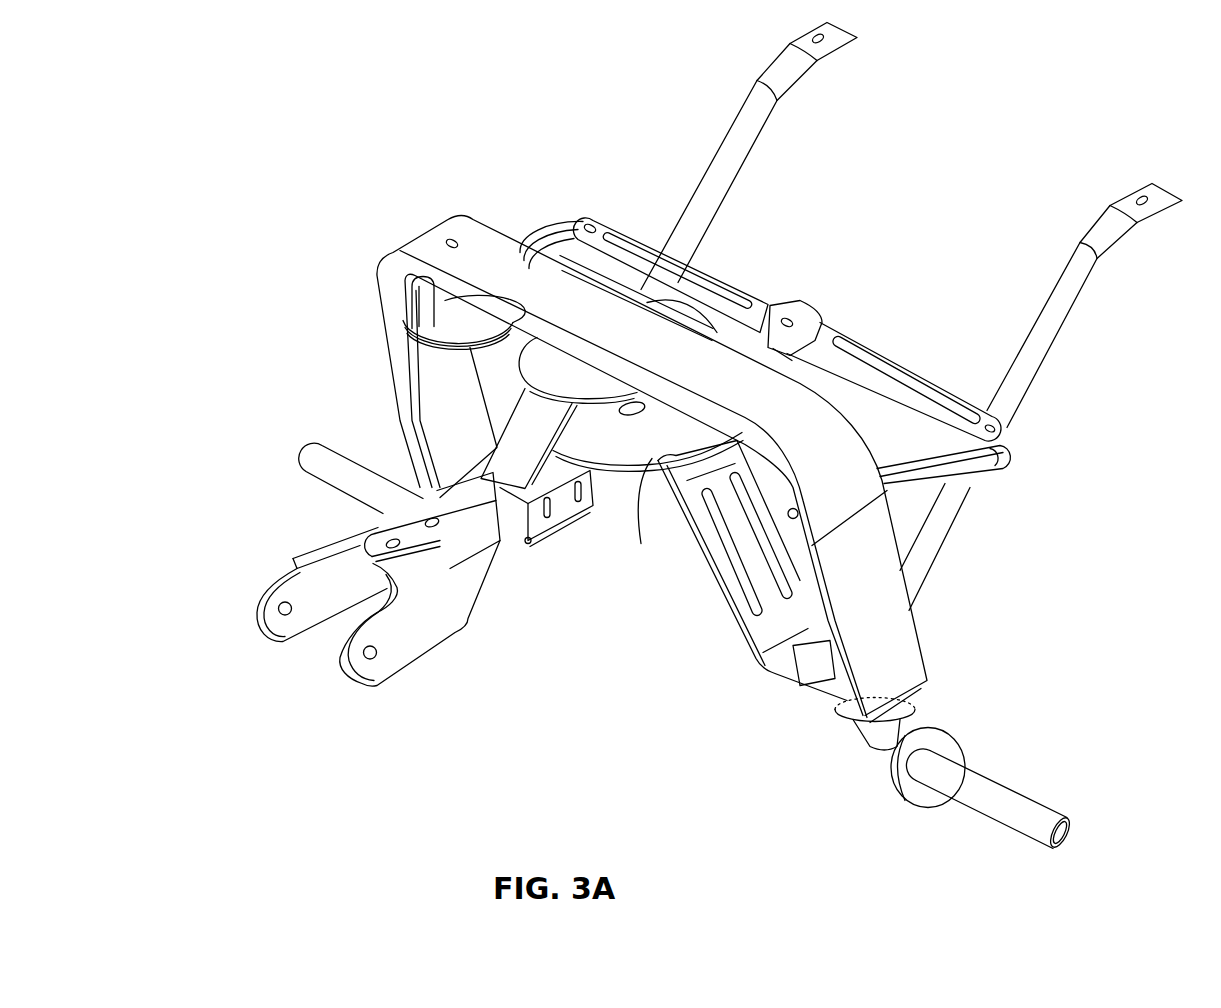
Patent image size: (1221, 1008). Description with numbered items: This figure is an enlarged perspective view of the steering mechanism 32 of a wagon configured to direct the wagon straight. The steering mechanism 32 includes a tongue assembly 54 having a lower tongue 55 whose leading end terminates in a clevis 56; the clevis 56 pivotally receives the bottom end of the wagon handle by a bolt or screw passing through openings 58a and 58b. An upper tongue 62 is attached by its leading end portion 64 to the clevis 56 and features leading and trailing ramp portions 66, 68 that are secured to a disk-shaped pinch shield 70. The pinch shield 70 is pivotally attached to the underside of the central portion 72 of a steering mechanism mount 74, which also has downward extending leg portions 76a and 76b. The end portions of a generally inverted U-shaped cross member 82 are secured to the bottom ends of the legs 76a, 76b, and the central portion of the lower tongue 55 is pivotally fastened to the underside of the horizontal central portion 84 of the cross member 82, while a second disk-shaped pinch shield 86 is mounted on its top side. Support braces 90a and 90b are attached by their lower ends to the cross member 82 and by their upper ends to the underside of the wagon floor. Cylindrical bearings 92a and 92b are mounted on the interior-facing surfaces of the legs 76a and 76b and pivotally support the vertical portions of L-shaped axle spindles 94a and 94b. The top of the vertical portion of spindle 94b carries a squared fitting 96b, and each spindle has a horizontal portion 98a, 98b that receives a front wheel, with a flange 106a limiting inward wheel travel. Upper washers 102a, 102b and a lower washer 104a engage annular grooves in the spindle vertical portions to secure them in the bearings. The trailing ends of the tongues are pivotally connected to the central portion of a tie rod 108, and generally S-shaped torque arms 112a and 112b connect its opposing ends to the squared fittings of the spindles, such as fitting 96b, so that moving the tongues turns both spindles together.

The steering mechanism 32 is at (358, 104).
The steering mechanism mount 74 is at (483, 212).
The central portion 72 is at (619, 333).
The leg portion 76a is at (893, 616).
The leg portion 76b is at (383, 337).
The upper tongue 62 is at (458, 447).
The squared fitting 96b is at (410, 292).
The upper washer 102b is at (407, 298).
The cylindrical bearing 92b is at (440, 372).
The S-shaped torque arm 112b is at (547, 220).
The trailing ramp portion 68 is at (718, 332).
The tie rod 108 is at (920, 382).
The S-shaped torque arm 112a is at (1013, 452).
The support brace 90b is at (757, 113).
The support brace 90a is at (1063, 308).
The pinch shield 70 is at (569, 386).
The pinch shield 86 is at (621, 450).
The leading ramp portion 66 is at (543, 443).
The lower tongue 55 is at (563, 497).
The leading end portion 64 is at (474, 516).
The horizontal portion 98b is at (327, 465).
The clevis 56 is at (371, 607).
The opening 58b is at (288, 615).
The opening 58a is at (372, 660).
The L-shaped axle spindle 94b is at (288, 421).
The tongue assembly 54 is at (551, 610).
The horizontal central portion 84 is at (643, 519).
The cross member 82 is at (708, 558).
The upper washer 102a is at (793, 518).
The cylindrical bearing 92a is at (763, 662).
The lower washer 104a is at (845, 720).
The flange 106a is at (957, 730).
The horizontal portion 98a is at (1010, 807).
The L-shaped axle spindle 94a is at (846, 822).